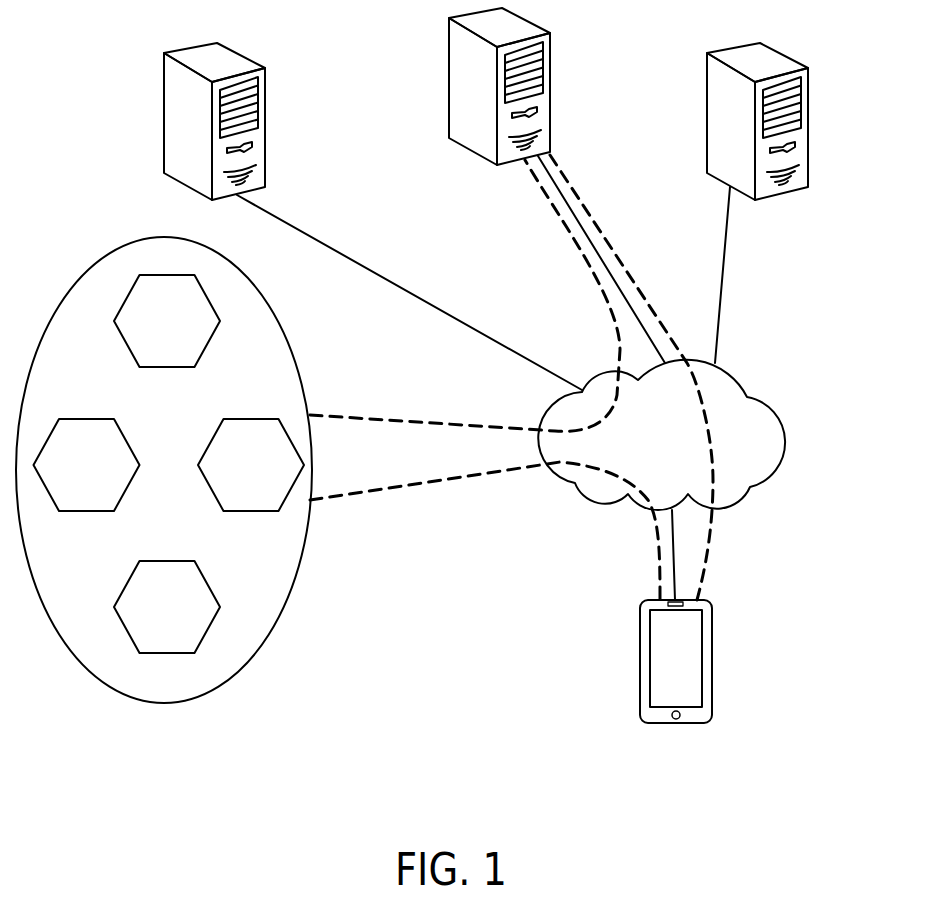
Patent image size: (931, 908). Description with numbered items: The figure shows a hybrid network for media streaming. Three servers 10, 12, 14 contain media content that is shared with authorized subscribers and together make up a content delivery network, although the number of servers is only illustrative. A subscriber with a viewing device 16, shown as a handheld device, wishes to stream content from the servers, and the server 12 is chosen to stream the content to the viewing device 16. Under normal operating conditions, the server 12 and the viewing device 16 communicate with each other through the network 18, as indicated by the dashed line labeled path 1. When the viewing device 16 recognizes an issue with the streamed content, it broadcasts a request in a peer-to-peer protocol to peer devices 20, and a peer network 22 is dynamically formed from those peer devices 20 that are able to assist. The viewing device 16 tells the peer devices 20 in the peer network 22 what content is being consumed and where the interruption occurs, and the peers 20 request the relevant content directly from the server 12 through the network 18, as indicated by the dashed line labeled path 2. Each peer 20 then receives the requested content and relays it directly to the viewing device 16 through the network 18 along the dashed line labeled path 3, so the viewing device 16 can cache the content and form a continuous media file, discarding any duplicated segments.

The server 10 is at (262, 102).
The server 12 is at (550, 68).
The server 14 is at (805, 102).
The viewing device 16 is at (712, 667).
The network 18 is at (783, 422).
The peer devices 20 is at (123, 338).
The peer network 22 is at (292, 348).
The path 1 is at (656, 377).
The path 2 is at (465, 295).
The path 3 is at (485, 531).